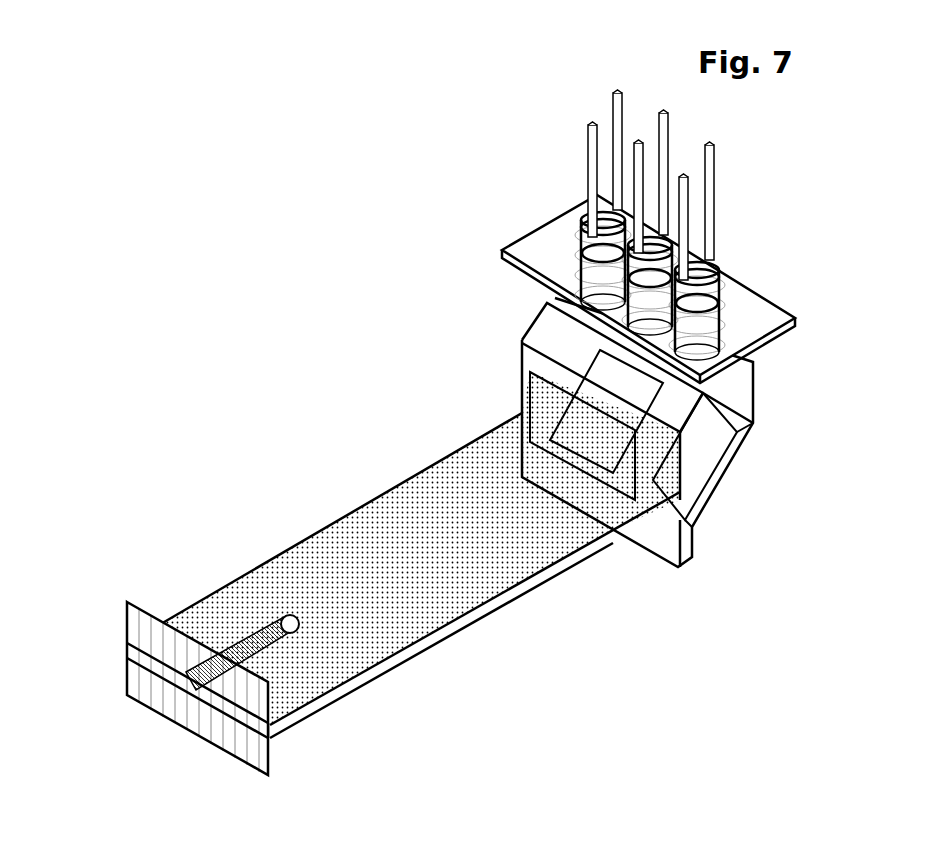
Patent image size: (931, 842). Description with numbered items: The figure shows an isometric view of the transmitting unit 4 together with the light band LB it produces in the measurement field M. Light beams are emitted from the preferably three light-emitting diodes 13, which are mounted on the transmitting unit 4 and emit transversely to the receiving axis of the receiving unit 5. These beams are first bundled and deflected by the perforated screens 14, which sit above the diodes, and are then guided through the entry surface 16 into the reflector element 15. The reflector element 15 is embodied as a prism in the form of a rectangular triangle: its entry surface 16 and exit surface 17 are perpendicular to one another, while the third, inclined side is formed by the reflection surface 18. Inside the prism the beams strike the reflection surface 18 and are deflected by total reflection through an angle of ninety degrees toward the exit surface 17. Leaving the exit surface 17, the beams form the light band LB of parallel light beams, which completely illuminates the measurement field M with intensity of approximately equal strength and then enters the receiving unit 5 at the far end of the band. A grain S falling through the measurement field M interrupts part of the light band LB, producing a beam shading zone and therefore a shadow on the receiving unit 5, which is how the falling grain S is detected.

The transmitting unit 4 is at (534, 182).
The receiving unit 5 is at (133, 602).
The light-emitting diodes 13 is at (705, 270).
The perforated screens 14 is at (527, 248).
The reflector element 15 is at (663, 563).
The entry surface 16 is at (560, 293).
The exit surface 17 is at (565, 392).
The reflection surface 18 is at (712, 470).
The light band LB is at (470, 585).
The measurement field M is at (278, 398).
The grain S is at (298, 632).